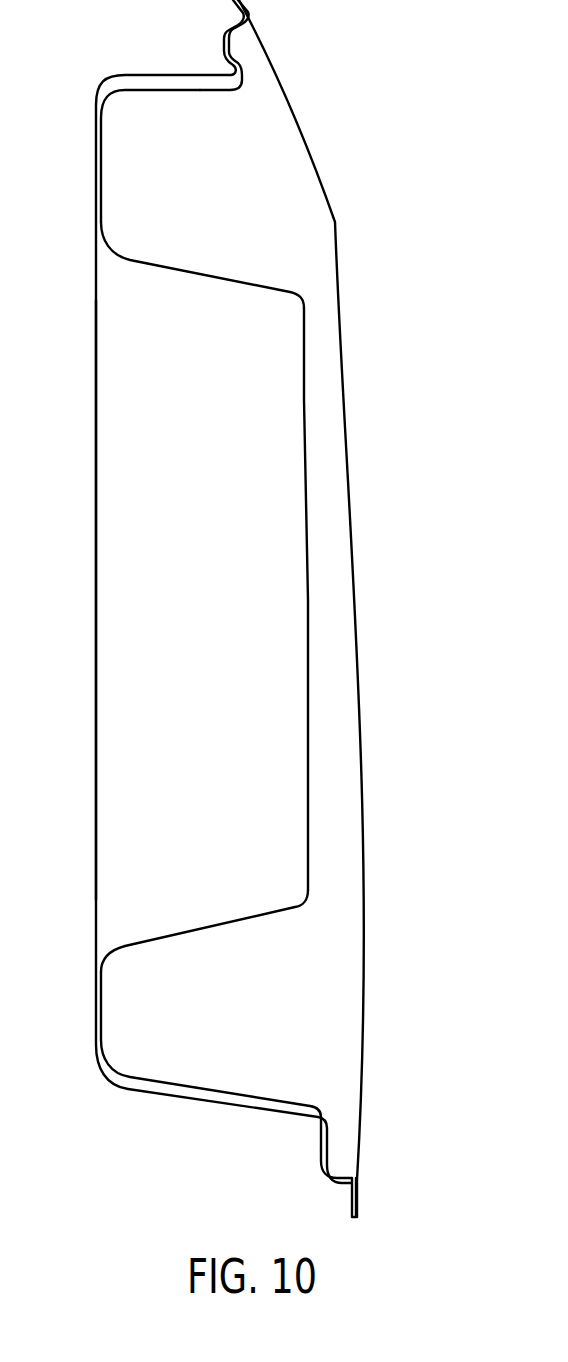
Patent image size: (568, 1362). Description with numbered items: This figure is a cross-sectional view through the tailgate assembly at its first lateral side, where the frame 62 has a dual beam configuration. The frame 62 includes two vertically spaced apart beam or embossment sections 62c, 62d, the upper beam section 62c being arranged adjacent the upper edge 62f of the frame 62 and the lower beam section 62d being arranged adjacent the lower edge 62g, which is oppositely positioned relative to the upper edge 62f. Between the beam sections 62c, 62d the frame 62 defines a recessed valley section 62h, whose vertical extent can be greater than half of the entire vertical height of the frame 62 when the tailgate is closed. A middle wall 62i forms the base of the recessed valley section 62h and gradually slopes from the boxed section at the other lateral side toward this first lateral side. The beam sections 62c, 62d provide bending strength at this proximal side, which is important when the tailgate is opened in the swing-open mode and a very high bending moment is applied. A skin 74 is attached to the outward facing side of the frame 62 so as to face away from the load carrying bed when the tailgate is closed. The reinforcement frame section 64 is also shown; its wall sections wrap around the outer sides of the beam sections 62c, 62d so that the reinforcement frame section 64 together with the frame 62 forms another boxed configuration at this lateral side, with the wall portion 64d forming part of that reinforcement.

The frame 62 is at (264, 608).
The beam section 62c is at (146, 264).
The beam section 62d is at (170, 933).
The upper edge 62f is at (240, 55).
The lower edge 62g is at (325, 1170).
The recessed valley section 62h is at (287, 437).
The middle wall 62i is at (307, 560).
The reinforcement frame section 64 is at (63, 404).
The side wall of outer member 64d is at (95, 584).
The skin 74 is at (367, 750).